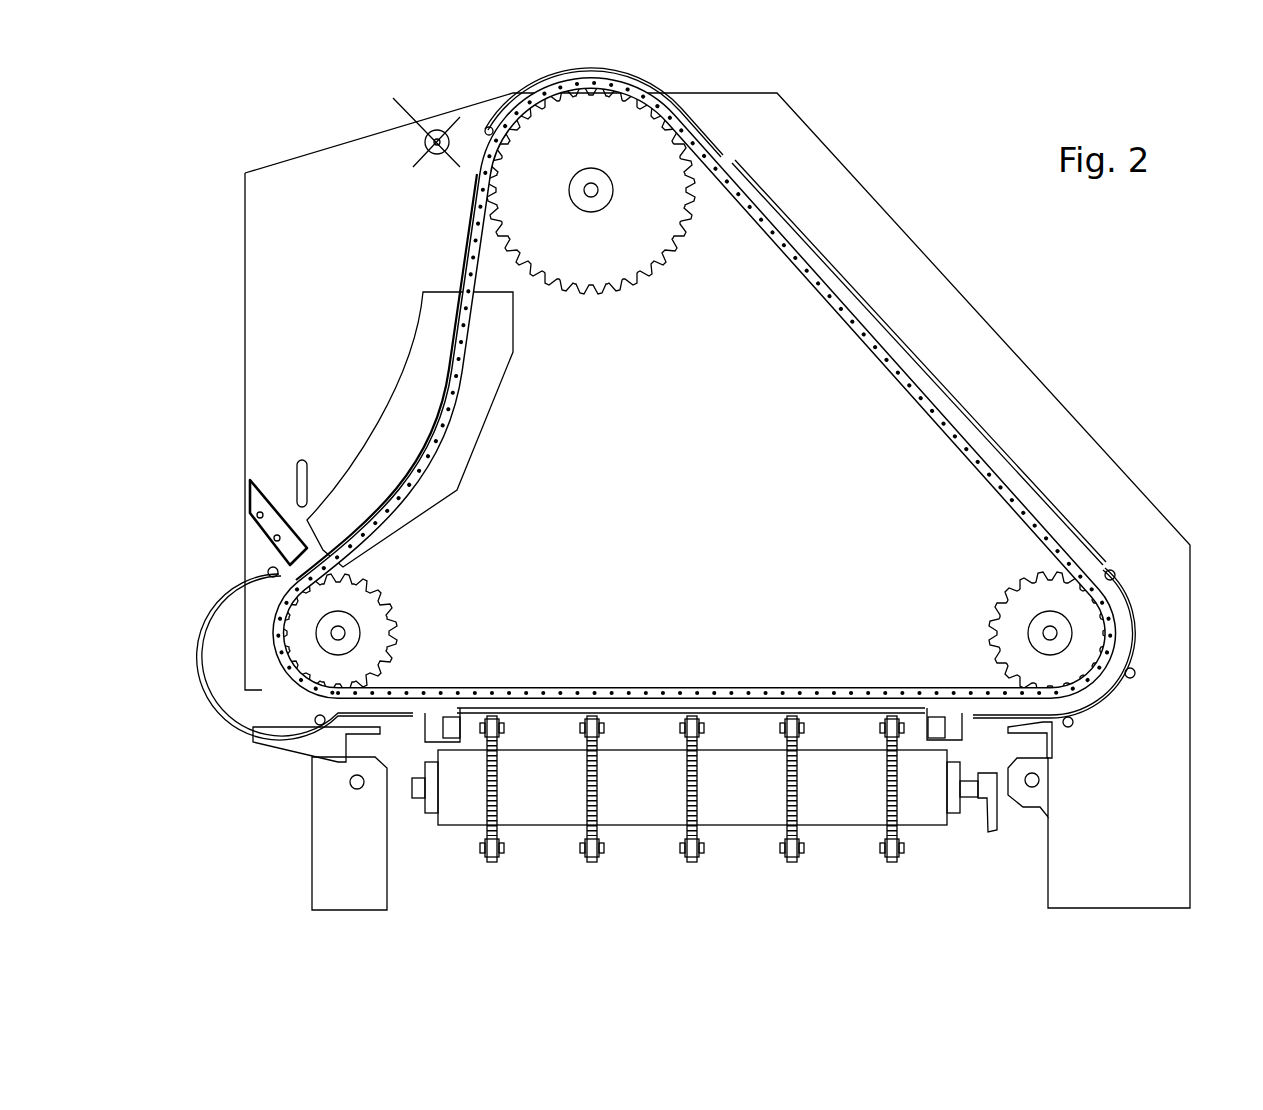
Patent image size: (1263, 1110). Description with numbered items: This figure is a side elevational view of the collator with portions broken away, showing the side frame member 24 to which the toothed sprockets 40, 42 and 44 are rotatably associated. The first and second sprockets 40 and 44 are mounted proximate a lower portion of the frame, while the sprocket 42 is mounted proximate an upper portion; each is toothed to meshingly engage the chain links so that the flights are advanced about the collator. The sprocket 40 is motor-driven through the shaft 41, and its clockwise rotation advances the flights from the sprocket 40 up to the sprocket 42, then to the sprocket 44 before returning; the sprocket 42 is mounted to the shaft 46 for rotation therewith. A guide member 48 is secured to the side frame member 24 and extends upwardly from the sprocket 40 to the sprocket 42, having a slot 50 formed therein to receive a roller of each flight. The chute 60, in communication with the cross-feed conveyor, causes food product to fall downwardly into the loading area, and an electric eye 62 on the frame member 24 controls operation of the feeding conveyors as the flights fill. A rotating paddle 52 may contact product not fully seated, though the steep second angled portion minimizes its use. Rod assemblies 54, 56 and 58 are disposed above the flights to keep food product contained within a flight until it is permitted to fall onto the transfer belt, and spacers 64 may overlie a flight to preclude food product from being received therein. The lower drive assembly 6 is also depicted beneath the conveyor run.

The drive assembly 6 is at (640, 715).
The side frame member 24 is at (735, 113).
The sprocket 40 is at (380, 602).
The shaft 41 is at (345, 637).
The sprocket 42 is at (610, 262).
The sprocket 44 is at (1018, 607).
The shaft 46 is at (598, 192).
The guide member 48 is at (483, 413).
The slot 50 is at (375, 510).
The rotating paddle 52 is at (405, 106).
The rod assembly 54 is at (615, 72).
The rod assembly 56 is at (885, 318).
The rod assembly 58 is at (1113, 687).
The chute 60 is at (262, 478).
The electric eye 62 is at (306, 458).
The spacer 64 is at (290, 688).